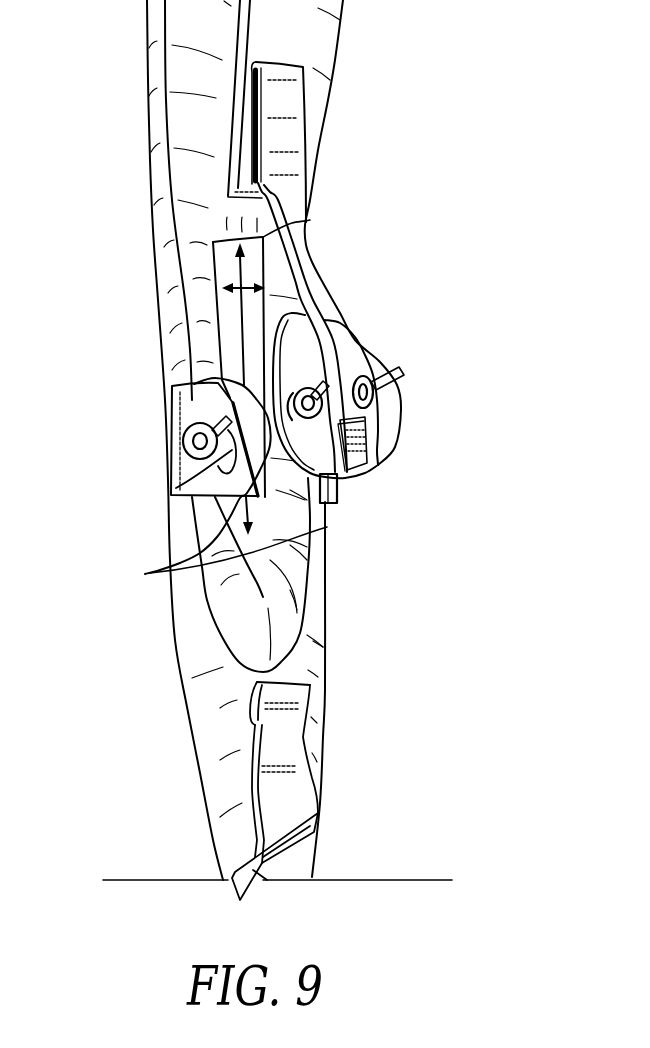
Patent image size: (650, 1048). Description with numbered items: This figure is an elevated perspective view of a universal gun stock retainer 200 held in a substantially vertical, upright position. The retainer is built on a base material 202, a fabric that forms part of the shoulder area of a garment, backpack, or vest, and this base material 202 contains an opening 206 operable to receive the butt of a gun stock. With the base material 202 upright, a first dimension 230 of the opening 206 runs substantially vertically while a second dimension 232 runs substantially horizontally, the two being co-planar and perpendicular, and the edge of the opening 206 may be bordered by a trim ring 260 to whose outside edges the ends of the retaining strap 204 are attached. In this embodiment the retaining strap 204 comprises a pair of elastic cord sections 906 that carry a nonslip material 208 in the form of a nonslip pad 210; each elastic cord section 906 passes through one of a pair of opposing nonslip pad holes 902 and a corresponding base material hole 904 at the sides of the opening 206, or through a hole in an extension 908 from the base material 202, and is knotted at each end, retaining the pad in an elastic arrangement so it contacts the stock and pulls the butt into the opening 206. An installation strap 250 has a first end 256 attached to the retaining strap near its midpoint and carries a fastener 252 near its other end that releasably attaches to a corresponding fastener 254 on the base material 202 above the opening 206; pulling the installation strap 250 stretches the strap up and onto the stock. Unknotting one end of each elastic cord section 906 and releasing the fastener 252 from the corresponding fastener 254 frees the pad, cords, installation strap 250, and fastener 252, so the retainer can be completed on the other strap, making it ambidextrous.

The gun stock retainer 200 is at (390, 326).
The base material 202 is at (321, 604).
The retaining strap 204 is at (226, 405).
The opening 206 is at (221, 265).
The nonslip material 208 is at (340, 480).
The nonslip pad 210 is at (373, 428).
The first dimension 230 is at (240, 335).
The second dimension 232 is at (310, 220).
The installation strap 250 is at (316, 291).
The fastener 252 is at (292, 110).
The corresponding fastener 254 is at (240, 116).
The first end 256 is at (355, 447).
The trim ring 260 is at (235, 595).
The nonslip pad holes 902 is at (373, 379).
The base material holes 904 is at (172, 493).
The elastic cord sections 906 is at (402, 368).
The extensions 908 is at (145, 574).